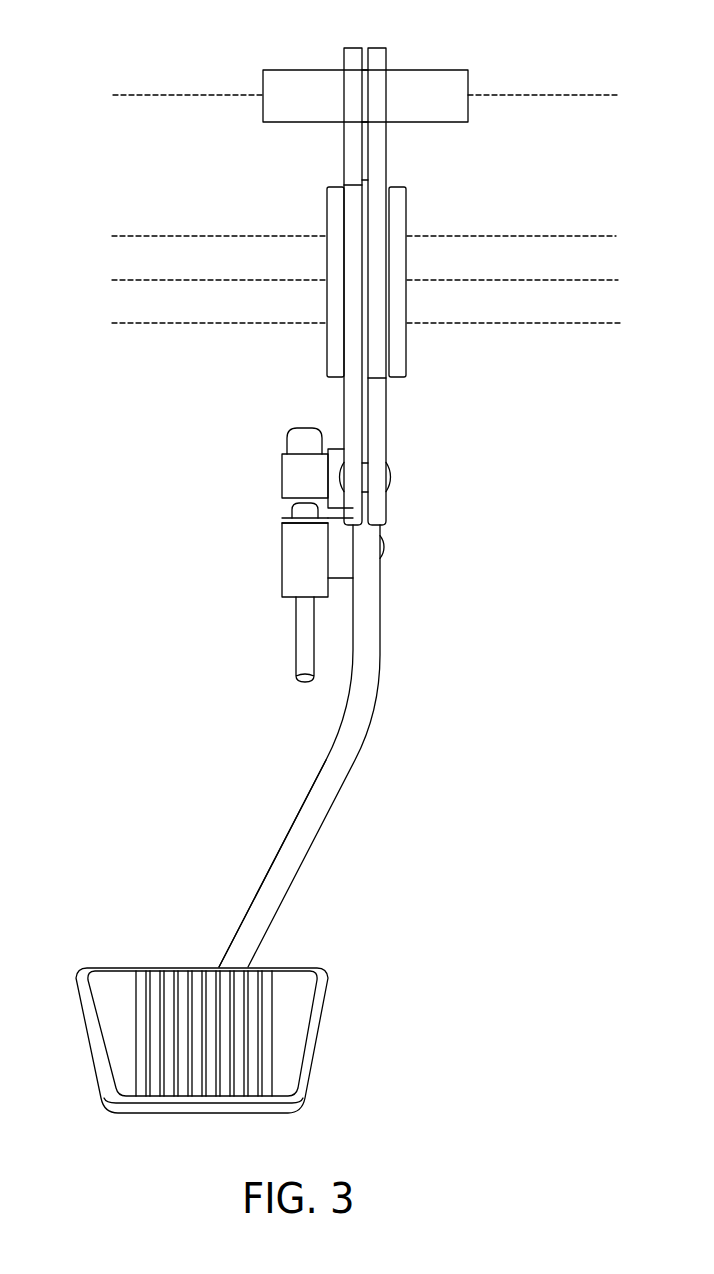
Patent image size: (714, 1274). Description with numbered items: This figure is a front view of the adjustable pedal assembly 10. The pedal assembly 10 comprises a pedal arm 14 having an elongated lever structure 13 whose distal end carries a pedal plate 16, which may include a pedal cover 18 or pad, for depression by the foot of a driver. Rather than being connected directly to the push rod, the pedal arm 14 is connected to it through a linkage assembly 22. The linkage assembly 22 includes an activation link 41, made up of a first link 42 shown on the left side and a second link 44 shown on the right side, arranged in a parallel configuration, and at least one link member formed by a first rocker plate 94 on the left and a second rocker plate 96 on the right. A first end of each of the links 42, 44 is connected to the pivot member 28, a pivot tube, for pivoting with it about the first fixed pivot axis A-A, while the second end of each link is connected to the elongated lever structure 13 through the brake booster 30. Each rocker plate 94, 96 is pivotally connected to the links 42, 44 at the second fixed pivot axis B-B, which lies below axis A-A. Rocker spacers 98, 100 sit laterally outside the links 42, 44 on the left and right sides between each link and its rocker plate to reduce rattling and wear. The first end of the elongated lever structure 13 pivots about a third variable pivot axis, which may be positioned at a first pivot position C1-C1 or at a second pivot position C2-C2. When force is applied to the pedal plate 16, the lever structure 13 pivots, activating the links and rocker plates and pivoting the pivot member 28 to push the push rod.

The pedal assembly 10 is at (190, 168).
The elongated lever structure 13 is at (285, 855).
The pedal arm 14 is at (340, 801).
The pedal plate 16 is at (212, 1040).
The pedal cover 18 is at (105, 1005).
The linkage assembly 22 is at (400, 532).
The pivot member 28 is at (433, 70).
The brake booster 30 is at (280, 564).
The activation link 41 is at (370, 267).
The first link 42 is at (352, 410).
The second link 44 is at (384, 512).
The first rocker plate 94 is at (332, 266).
The second rocker plate 96 is at (400, 217).
The rocker spacer 98 is at (344, 185).
The rocker spacer 100 is at (392, 380).
The first fixed pivot axis A is at (365, 95).
The second fixed pivot axis B is at (365, 280).
The first pivot position of the third variable pivot axis C1 is at (365, 236).
The second pivot position of the third variable pivot axis C2 is at (365, 323).